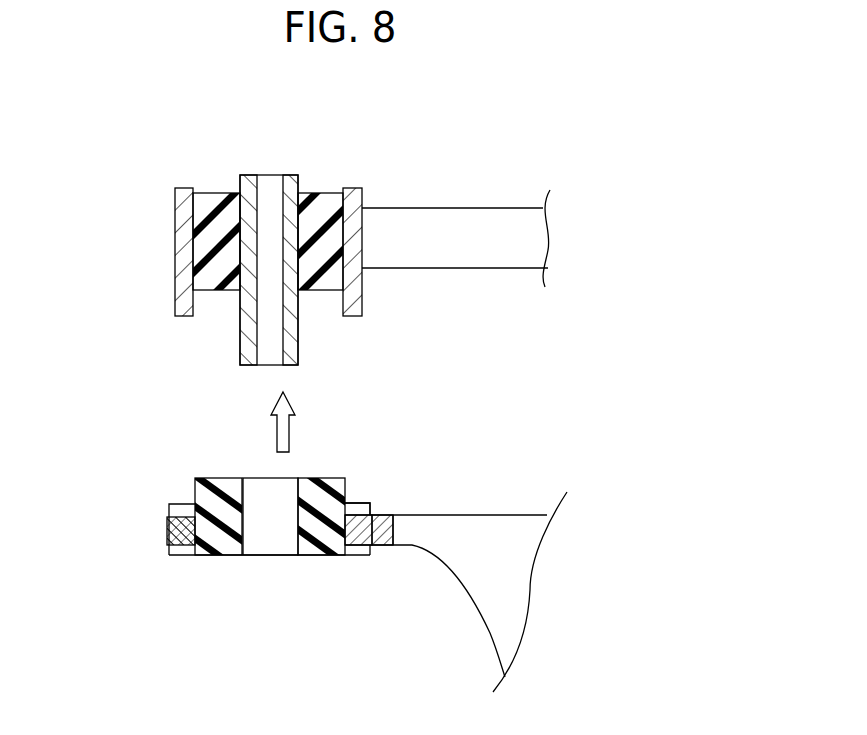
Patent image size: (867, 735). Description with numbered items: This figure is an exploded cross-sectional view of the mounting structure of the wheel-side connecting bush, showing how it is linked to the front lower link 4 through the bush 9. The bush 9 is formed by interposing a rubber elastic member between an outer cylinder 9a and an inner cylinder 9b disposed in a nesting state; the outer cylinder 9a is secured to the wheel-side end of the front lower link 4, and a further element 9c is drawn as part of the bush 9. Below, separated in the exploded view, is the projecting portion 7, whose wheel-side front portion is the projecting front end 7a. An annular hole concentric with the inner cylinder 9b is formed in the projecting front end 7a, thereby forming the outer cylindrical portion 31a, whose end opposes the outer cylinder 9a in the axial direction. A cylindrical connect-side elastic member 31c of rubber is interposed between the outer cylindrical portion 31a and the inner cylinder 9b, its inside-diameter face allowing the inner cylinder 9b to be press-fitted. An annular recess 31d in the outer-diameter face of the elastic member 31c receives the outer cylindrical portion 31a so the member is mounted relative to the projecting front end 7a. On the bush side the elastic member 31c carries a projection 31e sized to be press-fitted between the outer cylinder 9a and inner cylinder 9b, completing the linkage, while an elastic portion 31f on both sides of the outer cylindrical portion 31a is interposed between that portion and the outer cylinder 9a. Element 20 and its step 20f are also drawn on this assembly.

The bush 9 is at (318, 158).
The outer cylinder 9a is at (353, 195).
The inner cylinder 9b is at (288, 178).
The flange 9c is at (215, 197).
The front lower link 4 is at (466, 218).
The guide member 20 is at (348, 468).
The step portion 20f is at (368, 503).
The projecting portion 7 is at (513, 598).
The projecting front end 7a is at (382, 508).
The outer cylindrical portion 31a is at (167, 532).
The connect-side elastic member 31c is at (218, 557).
The annular recess 31d is at (180, 557).
The projection 31e is at (220, 487).
The elastic portion 31f is at (185, 507).